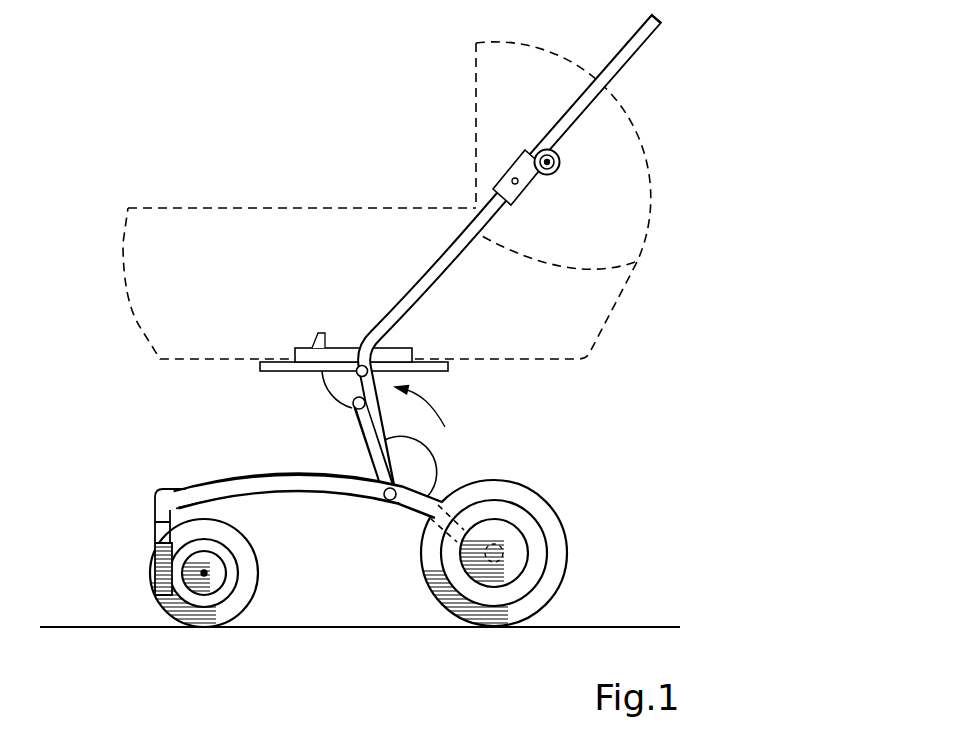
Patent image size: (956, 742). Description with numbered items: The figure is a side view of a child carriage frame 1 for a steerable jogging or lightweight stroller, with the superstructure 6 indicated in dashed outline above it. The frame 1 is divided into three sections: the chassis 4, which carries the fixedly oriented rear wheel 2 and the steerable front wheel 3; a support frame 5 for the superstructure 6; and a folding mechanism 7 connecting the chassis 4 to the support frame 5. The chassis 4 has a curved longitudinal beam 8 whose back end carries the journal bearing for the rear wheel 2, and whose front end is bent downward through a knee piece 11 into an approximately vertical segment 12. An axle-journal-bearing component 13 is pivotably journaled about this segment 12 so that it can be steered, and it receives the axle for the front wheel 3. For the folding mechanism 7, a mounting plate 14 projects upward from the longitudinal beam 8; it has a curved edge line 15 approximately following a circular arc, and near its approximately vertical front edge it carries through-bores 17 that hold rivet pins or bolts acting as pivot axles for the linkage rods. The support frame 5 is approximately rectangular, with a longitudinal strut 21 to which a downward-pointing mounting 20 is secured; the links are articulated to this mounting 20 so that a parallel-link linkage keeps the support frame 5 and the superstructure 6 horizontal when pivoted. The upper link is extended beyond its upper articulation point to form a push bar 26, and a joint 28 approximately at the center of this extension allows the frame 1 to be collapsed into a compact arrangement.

The frame 1 is at (290, 240).
The rear wheel 2 is at (507, 627).
The front wheel 3 is at (203, 628).
The chassis 4 is at (127, 511).
The support frame 5 is at (444, 372).
The superstructure 6 is at (367, 210).
The folding mechanism 7 is at (319, 485).
The longitudinal beam 8 is at (320, 488).
The knee piece 11 is at (160, 494).
The vertical segment 12 is at (157, 536).
The axle-journal-bearing component 13 is at (156, 553).
The mounting plate 14 is at (396, 466).
The curved edge line 15 is at (436, 468).
The through-bore 17 is at (384, 503).
The mounting 20 is at (340, 385).
The longitudinal strut 21 is at (278, 362).
The push bar 26 is at (436, 282).
The joint 28 is at (559, 171).